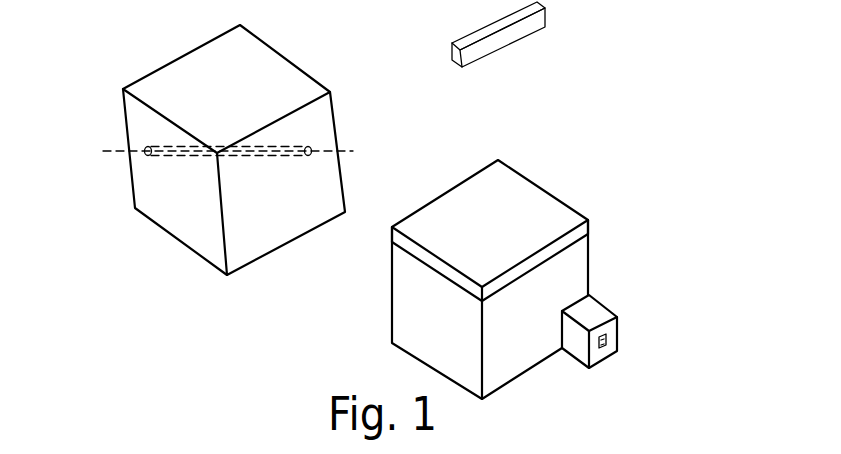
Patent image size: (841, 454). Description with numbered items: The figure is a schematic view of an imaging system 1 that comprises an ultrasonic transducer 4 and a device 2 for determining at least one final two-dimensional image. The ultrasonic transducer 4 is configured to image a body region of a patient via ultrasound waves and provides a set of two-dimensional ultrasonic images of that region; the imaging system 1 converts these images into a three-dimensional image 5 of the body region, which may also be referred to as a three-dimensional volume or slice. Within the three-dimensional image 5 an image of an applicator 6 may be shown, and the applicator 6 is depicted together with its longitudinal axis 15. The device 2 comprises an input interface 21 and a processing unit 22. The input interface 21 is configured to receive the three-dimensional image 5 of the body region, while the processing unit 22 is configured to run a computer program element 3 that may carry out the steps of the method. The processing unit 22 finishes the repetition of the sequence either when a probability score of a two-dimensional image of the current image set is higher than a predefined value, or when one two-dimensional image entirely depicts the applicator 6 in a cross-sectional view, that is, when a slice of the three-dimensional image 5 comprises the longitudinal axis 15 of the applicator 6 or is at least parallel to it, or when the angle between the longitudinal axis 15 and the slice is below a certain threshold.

The imaging system 1 is at (655, 76).
The device 2 is at (546, 268).
The input interface 21 is at (538, 208).
The processing unit 22 is at (594, 305).
The computer program element 3 is at (607, 339).
The ultrasonic transducer 4 is at (541, 13).
The three-dimensional image 5 is at (260, 235).
The applicator 6 is at (311, 149).
The longitudinal axis 15 is at (103, 151).